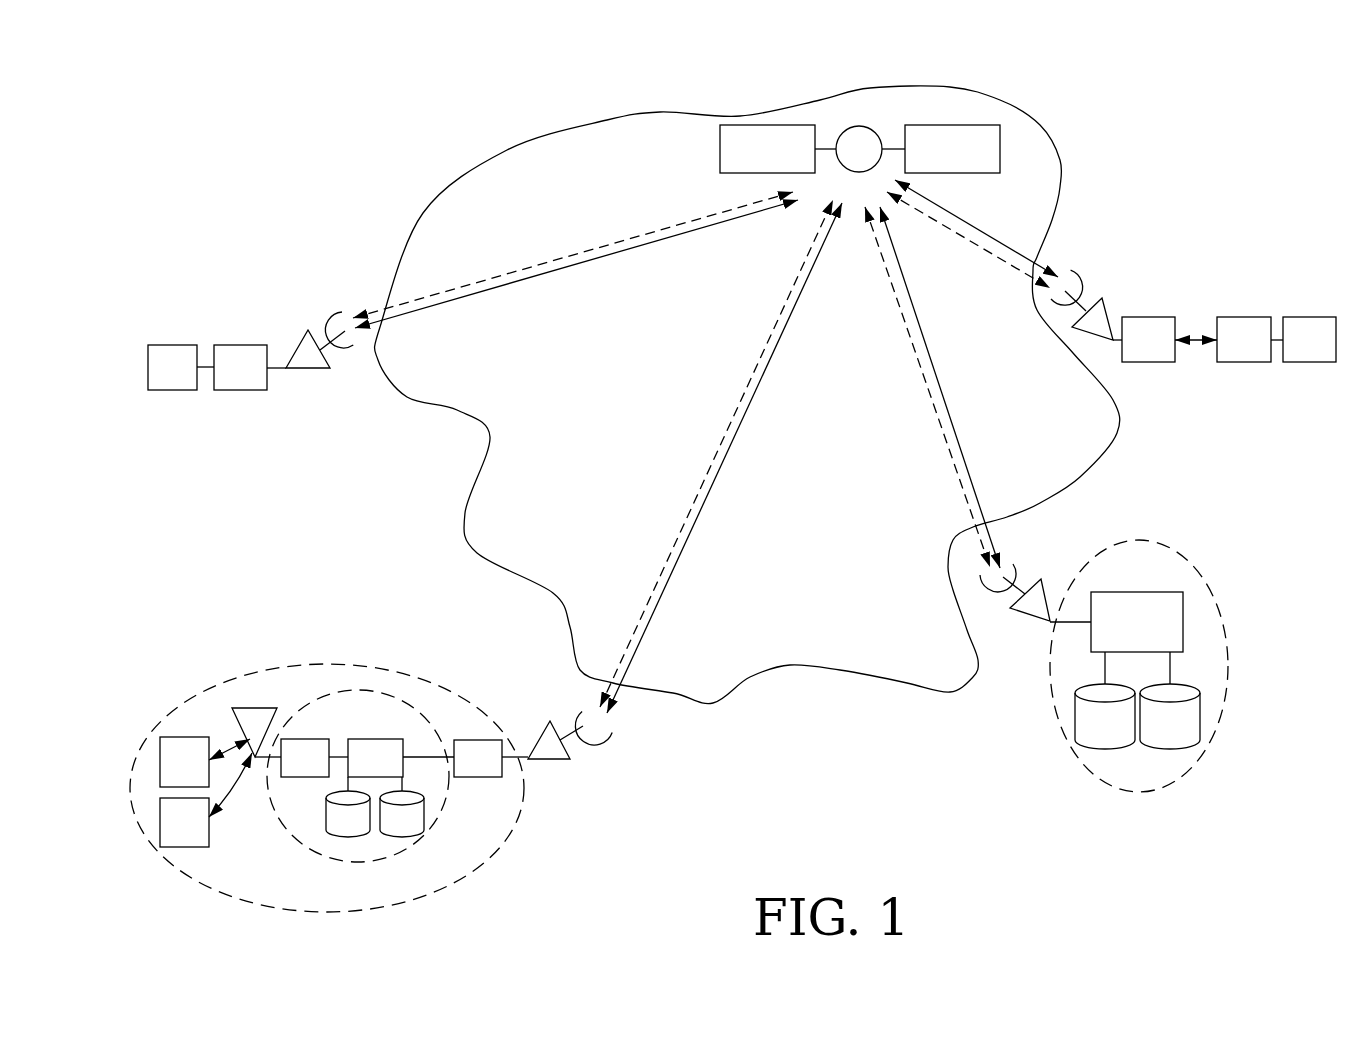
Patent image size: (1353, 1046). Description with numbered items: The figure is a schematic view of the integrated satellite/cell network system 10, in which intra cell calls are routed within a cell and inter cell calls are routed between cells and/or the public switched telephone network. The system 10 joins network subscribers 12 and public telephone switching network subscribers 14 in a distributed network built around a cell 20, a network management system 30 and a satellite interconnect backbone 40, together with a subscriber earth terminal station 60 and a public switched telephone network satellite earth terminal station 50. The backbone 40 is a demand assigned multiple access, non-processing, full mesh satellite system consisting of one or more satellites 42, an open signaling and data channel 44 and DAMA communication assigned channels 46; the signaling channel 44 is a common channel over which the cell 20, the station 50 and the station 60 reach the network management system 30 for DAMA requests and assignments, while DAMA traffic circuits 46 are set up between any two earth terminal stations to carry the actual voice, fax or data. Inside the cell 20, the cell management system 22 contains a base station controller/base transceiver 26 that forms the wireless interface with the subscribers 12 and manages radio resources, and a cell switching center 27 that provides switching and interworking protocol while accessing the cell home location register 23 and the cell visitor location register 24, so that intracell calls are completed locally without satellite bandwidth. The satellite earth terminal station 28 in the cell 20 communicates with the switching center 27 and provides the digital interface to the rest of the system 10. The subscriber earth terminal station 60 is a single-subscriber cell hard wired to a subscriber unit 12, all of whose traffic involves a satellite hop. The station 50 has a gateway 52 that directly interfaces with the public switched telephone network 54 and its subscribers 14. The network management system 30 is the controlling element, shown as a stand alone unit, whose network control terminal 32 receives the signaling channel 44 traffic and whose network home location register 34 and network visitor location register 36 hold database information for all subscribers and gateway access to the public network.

The integrated satellite/cell network system 10 is at (348, 170).
The network subscriber 12 is at (178, 596).
The public telephone switching network subscriber 14 is at (1309, 339).
The cell 20 is at (493, 878).
The cell management system 22 is at (293, 843).
The cell home location register 23 is at (348, 814).
The cell visitor location register 24 is at (402, 814).
The base station controller/base transceiver 26 is at (314, 758).
The cell switching center 27 is at (401, 765).
The satellite earth terminal station 28 is at (478, 758).
The network management system 30 is at (1200, 545).
The network control terminal 32 is at (1137, 638).
The network home location register 34 is at (1105, 716).
The network visitor location register 36 is at (1170, 716).
The satellite interconnect backbone 40 is at (1078, 180).
The satellite 42 is at (860, 149).
The open signaling and data channel 44 is at (582, 250).
The DAMA communication assigned channel 46 is at (440, 310).
The public switched telephone network satellite earth terminal station 50 is at (1243, 302).
The gateway 52 is at (1169, 339).
The public switched telephone network 54 is at (1250, 339).
The subscriber earth terminal station 60 is at (275, 351).